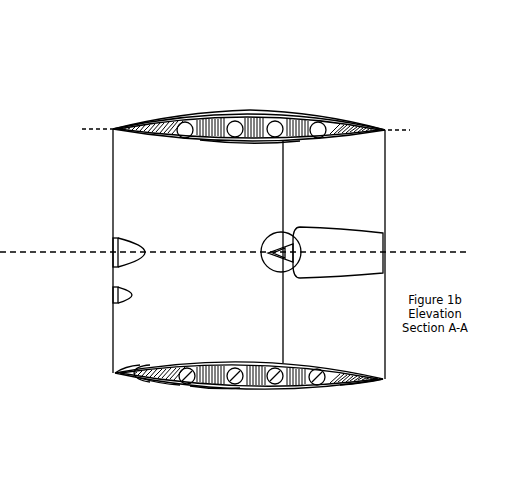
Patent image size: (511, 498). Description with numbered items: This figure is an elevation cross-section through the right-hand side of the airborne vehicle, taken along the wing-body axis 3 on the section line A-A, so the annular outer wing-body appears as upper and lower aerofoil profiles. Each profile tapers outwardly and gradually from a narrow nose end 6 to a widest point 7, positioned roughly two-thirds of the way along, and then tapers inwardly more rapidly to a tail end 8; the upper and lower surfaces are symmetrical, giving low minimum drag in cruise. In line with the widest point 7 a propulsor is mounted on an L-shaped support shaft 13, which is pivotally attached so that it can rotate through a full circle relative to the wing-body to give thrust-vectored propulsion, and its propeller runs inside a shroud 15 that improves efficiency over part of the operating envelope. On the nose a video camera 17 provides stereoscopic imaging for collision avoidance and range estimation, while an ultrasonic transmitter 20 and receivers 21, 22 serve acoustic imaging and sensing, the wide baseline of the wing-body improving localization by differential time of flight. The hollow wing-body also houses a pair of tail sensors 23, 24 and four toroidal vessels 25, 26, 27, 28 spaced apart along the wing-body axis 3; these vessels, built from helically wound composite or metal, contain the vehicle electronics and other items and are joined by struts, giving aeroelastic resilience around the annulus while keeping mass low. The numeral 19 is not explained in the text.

The wing-body axis 3 is at (433, 253).
The nose end 6 is at (113, 129).
The widest point 7 is at (265, 141).
The tail end 8 is at (385, 379).
The L-shaped support shaft 13 is at (268, 232).
The shroud 15 is at (342, 226).
The video camera 17 is at (113, 253).
The upper wing leading edge 19 is at (166, 125).
The ultrasonic transmitter 20 is at (120, 378).
The ultrasonic receiver 21 is at (113, 302).
The ultrasonic receiver 22 is at (214, 383).
The tail sensor 23 is at (372, 128).
The tail sensor 24 is at (385, 380).
The toroidal vessel 25 is at (193, 364).
The toroidal vessel 26 is at (241, 364).
The toroidal vessel 27 is at (289, 364).
The toroidal vessel 28 is at (323, 365).